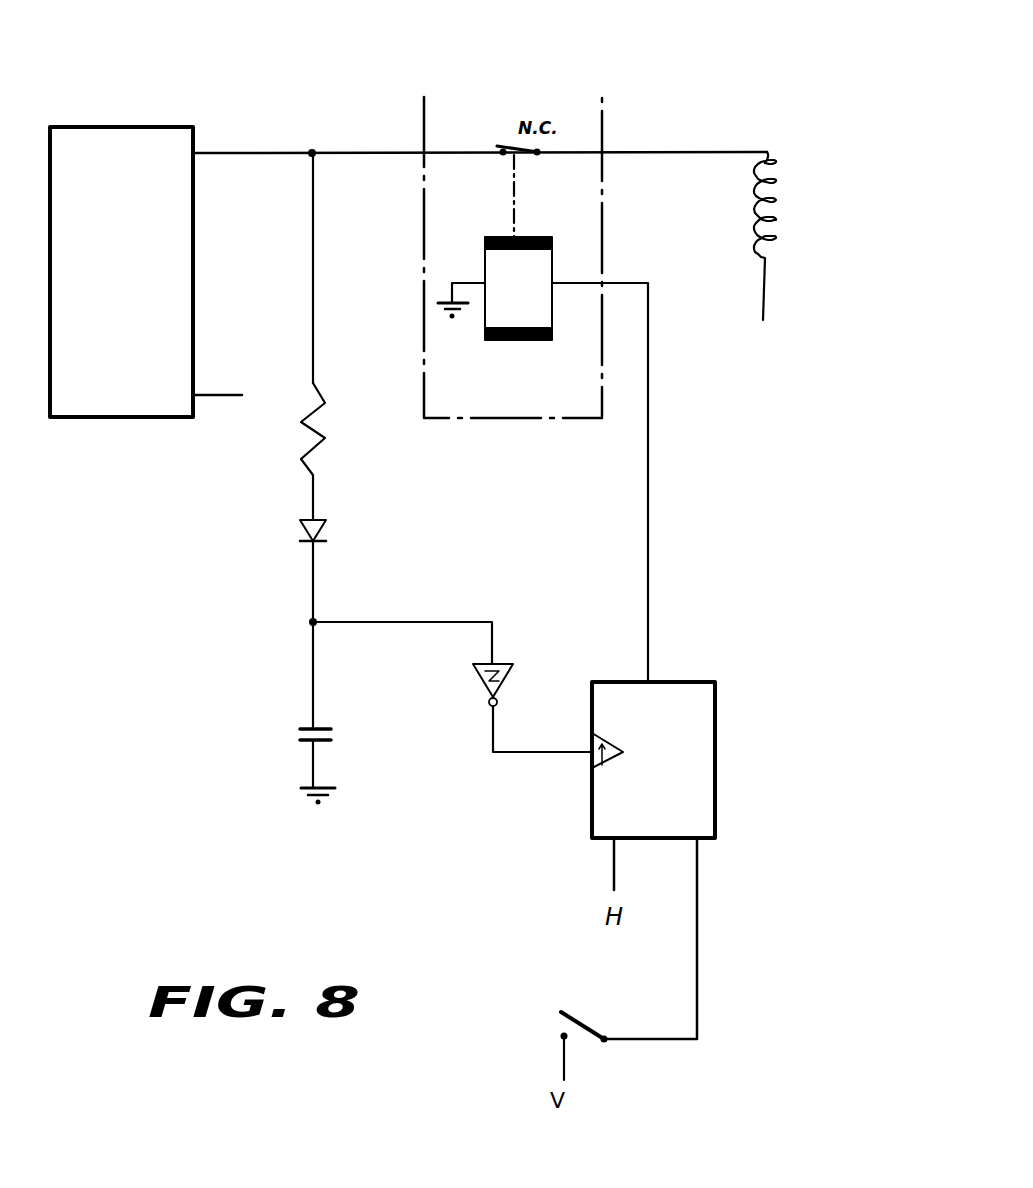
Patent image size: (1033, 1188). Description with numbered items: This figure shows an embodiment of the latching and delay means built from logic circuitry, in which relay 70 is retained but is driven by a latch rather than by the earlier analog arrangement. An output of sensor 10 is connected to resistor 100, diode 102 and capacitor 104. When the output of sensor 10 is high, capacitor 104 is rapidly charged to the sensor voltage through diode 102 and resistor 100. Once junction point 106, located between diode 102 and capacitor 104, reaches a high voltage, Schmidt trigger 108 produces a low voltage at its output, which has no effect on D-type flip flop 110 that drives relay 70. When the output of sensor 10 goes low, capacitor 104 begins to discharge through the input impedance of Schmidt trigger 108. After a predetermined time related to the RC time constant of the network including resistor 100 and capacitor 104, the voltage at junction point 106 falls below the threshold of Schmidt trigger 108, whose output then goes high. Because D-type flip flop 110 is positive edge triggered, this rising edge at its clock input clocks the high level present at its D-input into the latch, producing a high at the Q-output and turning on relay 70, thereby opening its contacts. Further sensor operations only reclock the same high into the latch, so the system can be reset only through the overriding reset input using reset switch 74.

The sensor 10 is at (150, 143).
The relay 70 is at (603, 86).
The reset switch 74 is at (560, 1022).
The resistor 100 is at (305, 432).
The diode 102 is at (328, 527).
The capacitor 104 is at (300, 736).
The junction point 106 is at (308, 626).
The Schmidt trigger 108 is at (513, 663).
The D-type flip flop 110 is at (722, 763).